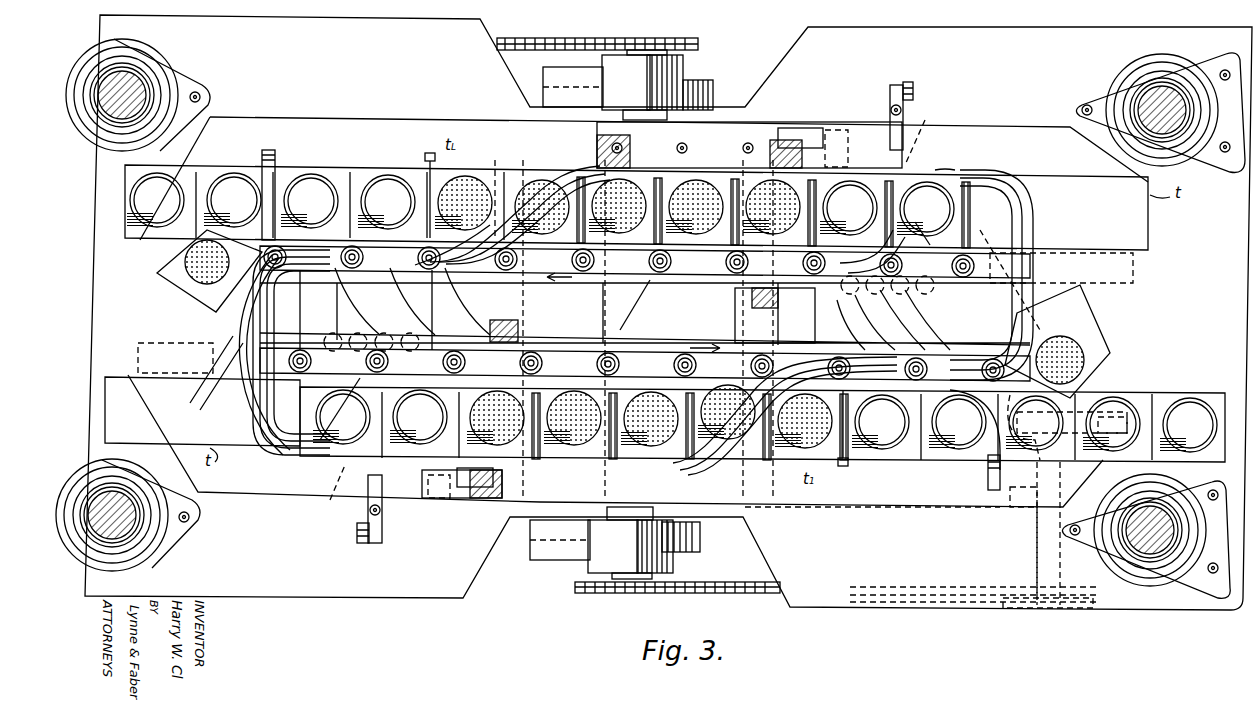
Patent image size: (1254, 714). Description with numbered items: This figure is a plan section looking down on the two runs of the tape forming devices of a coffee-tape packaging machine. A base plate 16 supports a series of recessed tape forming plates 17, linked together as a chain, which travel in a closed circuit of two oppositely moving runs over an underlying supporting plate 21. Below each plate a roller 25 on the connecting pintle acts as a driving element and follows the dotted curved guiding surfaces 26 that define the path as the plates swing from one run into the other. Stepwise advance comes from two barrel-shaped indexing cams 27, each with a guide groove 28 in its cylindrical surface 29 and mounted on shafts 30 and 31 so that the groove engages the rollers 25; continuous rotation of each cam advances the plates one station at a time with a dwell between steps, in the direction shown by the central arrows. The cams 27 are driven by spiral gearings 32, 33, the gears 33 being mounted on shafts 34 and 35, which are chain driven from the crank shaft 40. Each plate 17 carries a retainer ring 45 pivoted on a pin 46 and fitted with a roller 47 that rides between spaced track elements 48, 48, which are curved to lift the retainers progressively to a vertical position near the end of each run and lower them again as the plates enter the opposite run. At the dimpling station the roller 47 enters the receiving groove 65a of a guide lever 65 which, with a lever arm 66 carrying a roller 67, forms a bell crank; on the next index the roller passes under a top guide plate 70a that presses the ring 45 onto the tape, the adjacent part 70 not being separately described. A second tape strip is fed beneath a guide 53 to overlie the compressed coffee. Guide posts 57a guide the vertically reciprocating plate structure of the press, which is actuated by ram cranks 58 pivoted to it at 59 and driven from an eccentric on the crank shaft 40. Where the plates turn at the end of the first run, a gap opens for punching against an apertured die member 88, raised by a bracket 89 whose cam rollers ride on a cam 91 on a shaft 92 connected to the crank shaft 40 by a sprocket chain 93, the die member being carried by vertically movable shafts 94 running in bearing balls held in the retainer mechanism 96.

The base plate 16 is at (348, 598).
The tape forming plate 17 is at (160, 294).
The supporting plate 21 is at (893, 508).
The roller 25 is at (625, 328).
The guiding surface 26 is at (375, 242).
The indexing cam 27 is at (442, 300).
The guide groove 28 is at (430, 312).
The cylindrical surface 29 is at (630, 317).
The shaft 30 is at (138, 355).
The shaft 31 is at (1133, 270).
The spiral gear 32 is at (520, 325).
The spiral gear 33 is at (560, 352).
The shaft 34 is at (525, 303).
The shaft 35 is at (760, 330).
The crank shaft 40 is at (680, 518).
The retainer ring 45 is at (330, 240).
The pin 46 is at (948, 180).
The roller 47 is at (300, 240).
The track element 48 is at (545, 165).
The guide 53 is at (425, 162).
The guide post 57a is at (125, 95).
The ram crank 58 is at (680, 90).
The pivot 59 is at (660, 118).
The guide lever 65 is at (826, 135).
The receiving groove 65a is at (838, 130).
The lever arm 66 is at (892, 85).
The roller 67 is at (910, 82).
The pivot pin 70 is at (902, 110).
The top guide plate 70a is at (760, 125).
The die member 88 is at (268, 150).
The bracket 89 is at (1100, 420).
The cam 91 is at (1125, 418).
The shaft 92 is at (1035, 548).
The sprocket chain 93 is at (930, 605).
The vertically movable shaft 94 is at (1060, 430).
The retainer mechanism 96 is at (1010, 505).